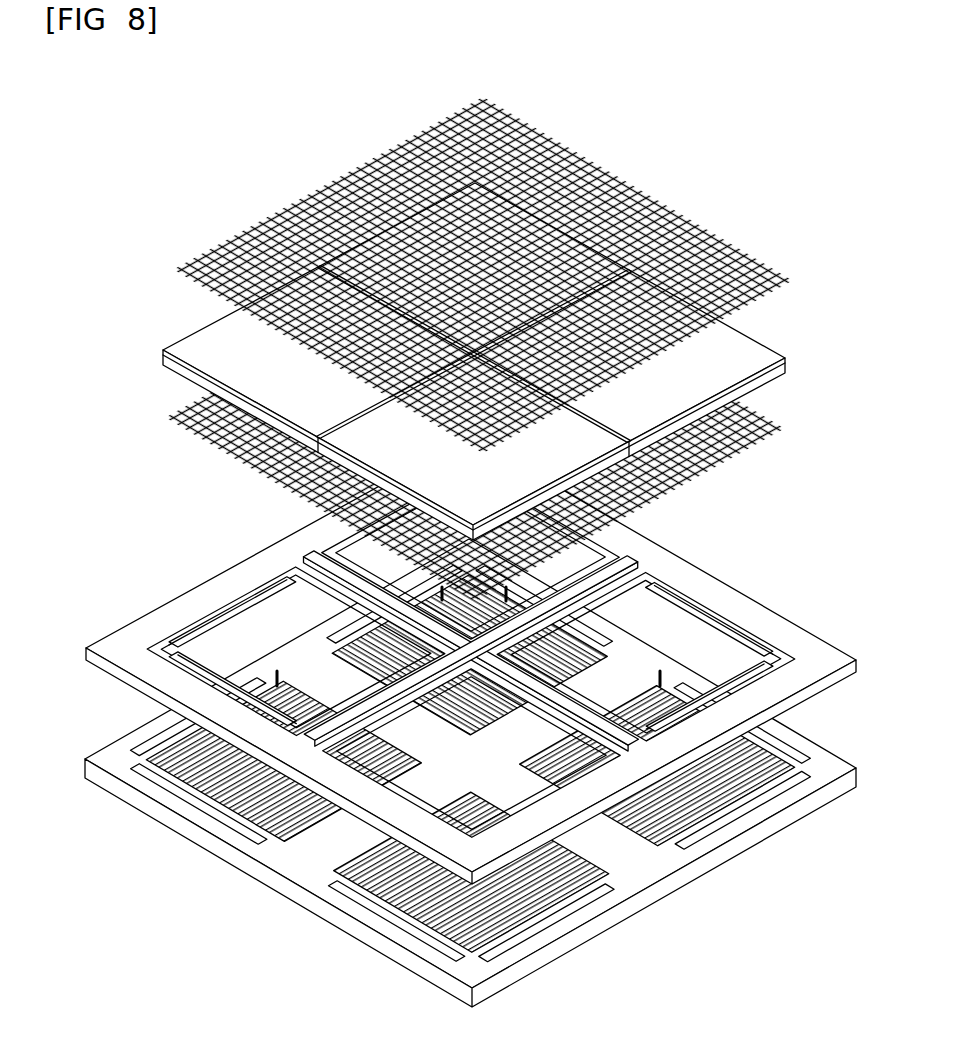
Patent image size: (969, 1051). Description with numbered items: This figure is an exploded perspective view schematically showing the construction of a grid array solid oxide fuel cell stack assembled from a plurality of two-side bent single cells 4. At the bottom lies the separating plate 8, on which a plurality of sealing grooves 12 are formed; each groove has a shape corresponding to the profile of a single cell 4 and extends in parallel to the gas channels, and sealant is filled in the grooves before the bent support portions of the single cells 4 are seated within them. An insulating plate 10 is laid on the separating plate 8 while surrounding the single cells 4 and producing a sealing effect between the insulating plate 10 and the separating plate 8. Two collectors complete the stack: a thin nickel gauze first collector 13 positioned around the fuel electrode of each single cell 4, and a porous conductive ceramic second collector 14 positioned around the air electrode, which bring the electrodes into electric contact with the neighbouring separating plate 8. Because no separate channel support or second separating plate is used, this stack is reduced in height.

The second collector 14 is at (677, 240).
The single cell 4 is at (727, 352).
The first collector 13 is at (685, 480).
The insulating plate 10 is at (196, 592).
The separating plate 8 is at (450, 773).
The sealing grooves 12 is at (640, 867).